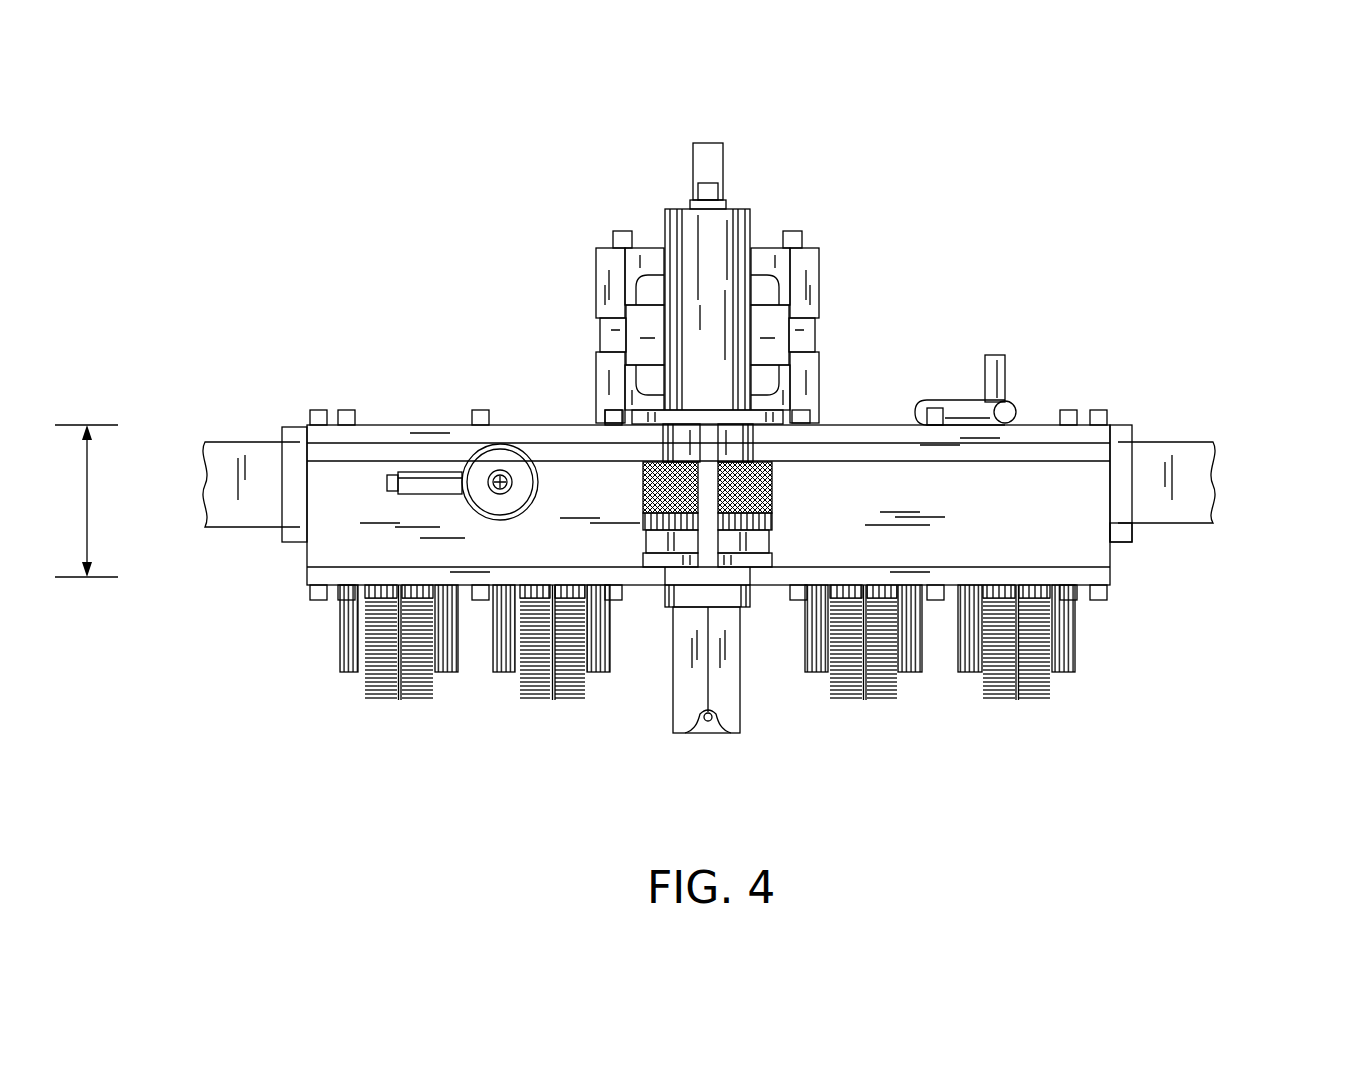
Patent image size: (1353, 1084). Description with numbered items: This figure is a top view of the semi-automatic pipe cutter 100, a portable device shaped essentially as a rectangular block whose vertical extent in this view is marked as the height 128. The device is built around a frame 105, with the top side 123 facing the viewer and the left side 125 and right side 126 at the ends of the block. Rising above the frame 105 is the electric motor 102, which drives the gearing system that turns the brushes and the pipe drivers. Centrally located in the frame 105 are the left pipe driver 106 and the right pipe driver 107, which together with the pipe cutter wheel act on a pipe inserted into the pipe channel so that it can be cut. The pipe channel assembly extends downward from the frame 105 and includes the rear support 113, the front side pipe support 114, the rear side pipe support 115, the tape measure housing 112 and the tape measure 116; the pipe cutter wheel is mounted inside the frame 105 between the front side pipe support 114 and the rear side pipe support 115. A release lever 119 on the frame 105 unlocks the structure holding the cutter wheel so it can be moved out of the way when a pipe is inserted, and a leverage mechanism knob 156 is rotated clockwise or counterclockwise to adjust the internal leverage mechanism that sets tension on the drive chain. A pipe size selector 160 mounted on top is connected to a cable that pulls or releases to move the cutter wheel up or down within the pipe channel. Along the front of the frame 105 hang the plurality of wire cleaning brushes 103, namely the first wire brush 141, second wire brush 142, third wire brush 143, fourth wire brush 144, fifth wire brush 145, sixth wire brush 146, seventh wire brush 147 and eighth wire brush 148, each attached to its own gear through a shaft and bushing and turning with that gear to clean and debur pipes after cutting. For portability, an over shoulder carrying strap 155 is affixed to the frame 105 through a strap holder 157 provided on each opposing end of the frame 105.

The semi-automatic pipe cutter 100 is at (326, 215).
The electric motor 102 is at (808, 270).
The plurality of wire cleaning brushes 103 is at (400, 693).
The frame 105 is at (320, 553).
The left pipe driver 106 is at (658, 472).
The right pipe driver 107 is at (752, 472).
The tape measure housing 112 is at (692, 752).
The rear support 113 is at (757, 259).
The front side pipe support 114 is at (745, 610).
The rear side pipe support 115 is at (693, 232).
The tape measure 116 is at (710, 722).
The release lever 119 is at (408, 480).
The top side 123 is at (1128, 612).
The left side 125 is at (265, 546).
The right side 126 is at (1145, 542).
The height 128 is at (86, 501).
The first wire brush 141 is at (378, 697).
The second wire brush 142 is at (575, 696).
The third wire brush 143 is at (855, 695).
The fourth wire brush 144 is at (1045, 695).
The fifth wire brush 145 is at (1065, 672).
The sixth wire brush 146 is at (820, 672).
The seventh wire brush 147 is at (598, 672).
The eighth wire brush 148 is at (358, 672).
The over shoulder carrying strap 155 is at (237, 470).
The leverage mechanism knob 156 is at (498, 455).
The strap holder 157 is at (1122, 428).
The pipe size selector 160 is at (998, 373).